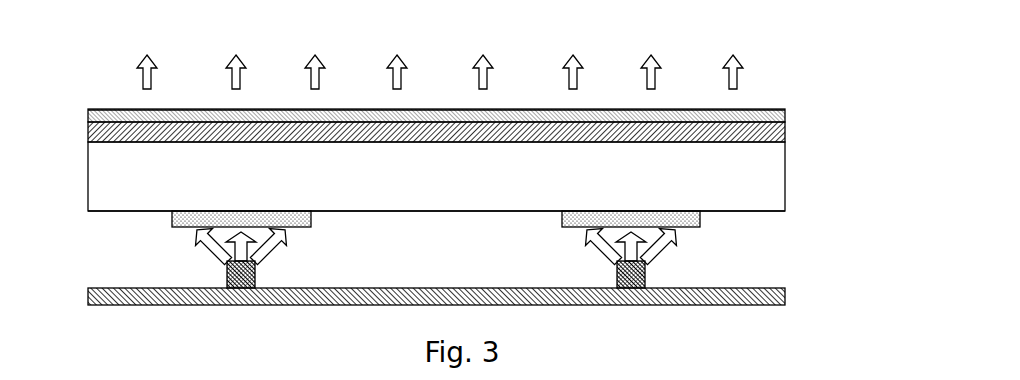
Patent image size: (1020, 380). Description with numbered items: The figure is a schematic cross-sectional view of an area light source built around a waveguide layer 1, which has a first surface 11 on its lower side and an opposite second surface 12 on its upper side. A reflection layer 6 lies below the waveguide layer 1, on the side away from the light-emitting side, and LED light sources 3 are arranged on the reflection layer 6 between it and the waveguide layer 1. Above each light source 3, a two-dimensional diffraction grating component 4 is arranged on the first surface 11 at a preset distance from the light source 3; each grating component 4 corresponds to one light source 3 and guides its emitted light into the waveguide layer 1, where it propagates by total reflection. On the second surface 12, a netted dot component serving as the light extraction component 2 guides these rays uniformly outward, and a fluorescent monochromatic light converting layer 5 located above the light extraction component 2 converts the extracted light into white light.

The waveguide layer 1 is at (785, 176).
The light extraction component 2 is at (785, 133).
The light source 3 is at (257, 275).
The two-dimensional diffraction grating component 4 is at (311, 219).
The monochromatic light converting layer 5 is at (785, 118).
The reflection layer 6 is at (787, 297).
The first surface 11 is at (442, 211).
The second surface 12 is at (103, 115).